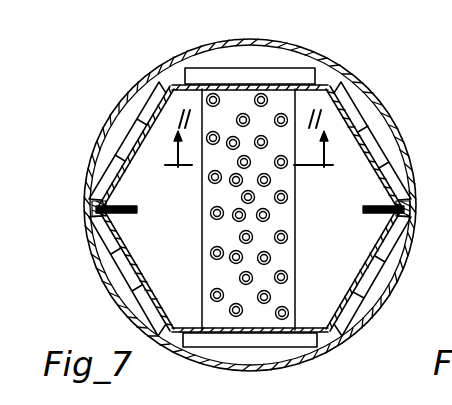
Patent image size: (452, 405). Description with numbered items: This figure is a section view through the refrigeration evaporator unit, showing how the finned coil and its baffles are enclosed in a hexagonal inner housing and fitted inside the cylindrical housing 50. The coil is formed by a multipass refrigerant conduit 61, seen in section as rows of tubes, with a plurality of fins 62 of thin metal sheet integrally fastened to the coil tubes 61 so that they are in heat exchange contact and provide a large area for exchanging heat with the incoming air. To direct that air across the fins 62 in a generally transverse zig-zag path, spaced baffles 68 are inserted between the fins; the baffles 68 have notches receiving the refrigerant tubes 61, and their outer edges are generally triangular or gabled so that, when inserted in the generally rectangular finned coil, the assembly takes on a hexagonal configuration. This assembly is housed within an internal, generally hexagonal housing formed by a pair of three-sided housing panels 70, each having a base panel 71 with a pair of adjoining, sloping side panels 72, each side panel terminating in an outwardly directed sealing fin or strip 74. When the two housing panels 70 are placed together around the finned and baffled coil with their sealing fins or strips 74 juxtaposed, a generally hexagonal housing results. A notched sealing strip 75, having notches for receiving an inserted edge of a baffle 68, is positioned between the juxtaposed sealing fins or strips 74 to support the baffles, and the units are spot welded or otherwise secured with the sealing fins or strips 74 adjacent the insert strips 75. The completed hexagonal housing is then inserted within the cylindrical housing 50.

The cylindrical housing 50 is at (198, 363).
The refrigerant conduit 61 is at (201, 266).
The fins 62 is at (290, 101).
The baffles 68 is at (178, 244).
The housing panels 70 is at (211, 80).
The base panel 71 is at (284, 86).
The sloping side panels 72 is at (376, 130).
The sealing fin or strip 74 is at (96, 224).
The notched sealing strip 75 is at (131, 205).